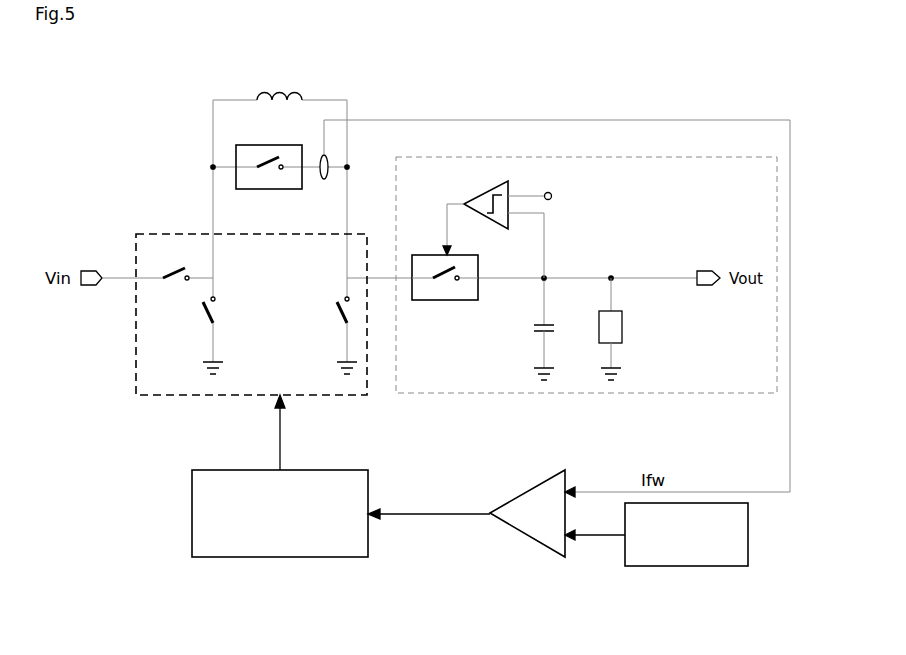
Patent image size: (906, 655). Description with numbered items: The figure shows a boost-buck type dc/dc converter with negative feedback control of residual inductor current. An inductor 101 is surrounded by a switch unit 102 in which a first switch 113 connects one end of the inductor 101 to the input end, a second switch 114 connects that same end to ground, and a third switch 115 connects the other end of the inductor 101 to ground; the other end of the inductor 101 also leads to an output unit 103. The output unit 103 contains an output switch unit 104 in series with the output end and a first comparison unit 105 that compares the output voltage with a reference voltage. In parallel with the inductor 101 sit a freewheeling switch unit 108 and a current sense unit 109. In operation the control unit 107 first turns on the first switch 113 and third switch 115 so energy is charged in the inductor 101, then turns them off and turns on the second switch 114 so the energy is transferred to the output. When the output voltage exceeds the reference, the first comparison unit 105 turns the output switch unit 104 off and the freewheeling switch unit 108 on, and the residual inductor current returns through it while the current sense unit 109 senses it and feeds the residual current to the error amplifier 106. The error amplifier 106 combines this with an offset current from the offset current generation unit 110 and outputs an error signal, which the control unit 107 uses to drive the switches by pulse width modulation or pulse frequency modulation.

The inductor 101 is at (284, 94).
The switch unit 102 is at (176, 397).
The output unit 103 is at (582, 157).
The output switch unit 104 is at (443, 300).
The first comparison unit 105 is at (484, 192).
The error amplifier 106 is at (527, 537).
The control unit 107 is at (210, 557).
The freewheeling switch unit 108 is at (236, 153).
The current sense unit 109 is at (329, 172).
The offset current unit 110 is at (685, 566).
The first switch 113 is at (180, 268).
The second switch 114 is at (207, 312).
The third switch 115 is at (340, 312).